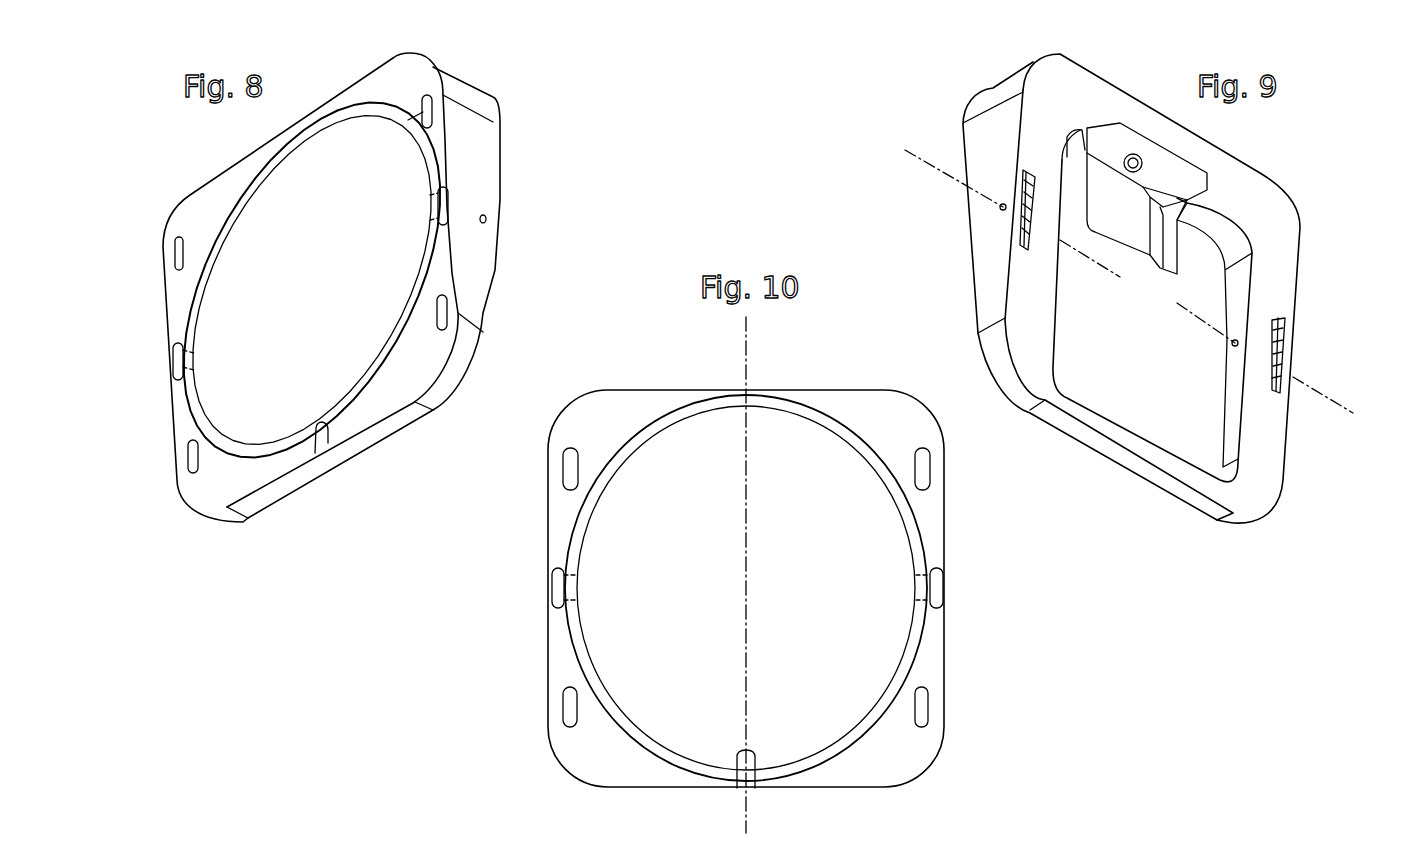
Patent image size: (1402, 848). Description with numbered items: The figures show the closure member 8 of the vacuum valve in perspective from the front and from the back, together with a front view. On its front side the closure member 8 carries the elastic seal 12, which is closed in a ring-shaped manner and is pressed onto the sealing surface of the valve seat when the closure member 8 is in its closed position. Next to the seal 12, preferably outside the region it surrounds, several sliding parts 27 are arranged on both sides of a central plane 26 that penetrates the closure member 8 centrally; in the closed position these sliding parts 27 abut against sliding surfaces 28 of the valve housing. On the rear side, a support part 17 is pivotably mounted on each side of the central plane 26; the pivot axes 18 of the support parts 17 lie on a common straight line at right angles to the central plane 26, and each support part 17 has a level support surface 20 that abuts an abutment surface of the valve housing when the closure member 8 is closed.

In FIG. 8, the closure member 8 is at (227, 482).
In FIG. 9, the closure member 8 is at (1245, 492).
In FIG. 10, the closure member 8 is at (930, 668).
In FIG. 8, the elastic seal 12 is at (355, 420).
In FIG. 10, the elastic seal 12 is at (628, 730).
In FIG. 9, the support part 17 is at (1027, 190).
In FIG. 9, the pivot axis 18 is at (950, 180).
In FIG. 9, the support surface 20 is at (1040, 222).
In FIG. 10, the central plane 26 is at (747, 815).
In FIG. 8, the sliding part 27 is at (443, 313).
In FIG. 10, the sliding part 27 is at (556, 597).
In FIG. 8, the sliding surface 28 is at (433, 125).